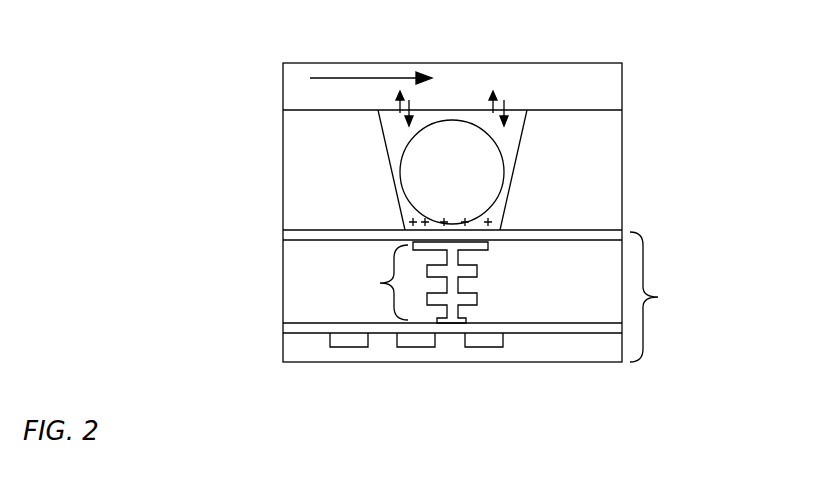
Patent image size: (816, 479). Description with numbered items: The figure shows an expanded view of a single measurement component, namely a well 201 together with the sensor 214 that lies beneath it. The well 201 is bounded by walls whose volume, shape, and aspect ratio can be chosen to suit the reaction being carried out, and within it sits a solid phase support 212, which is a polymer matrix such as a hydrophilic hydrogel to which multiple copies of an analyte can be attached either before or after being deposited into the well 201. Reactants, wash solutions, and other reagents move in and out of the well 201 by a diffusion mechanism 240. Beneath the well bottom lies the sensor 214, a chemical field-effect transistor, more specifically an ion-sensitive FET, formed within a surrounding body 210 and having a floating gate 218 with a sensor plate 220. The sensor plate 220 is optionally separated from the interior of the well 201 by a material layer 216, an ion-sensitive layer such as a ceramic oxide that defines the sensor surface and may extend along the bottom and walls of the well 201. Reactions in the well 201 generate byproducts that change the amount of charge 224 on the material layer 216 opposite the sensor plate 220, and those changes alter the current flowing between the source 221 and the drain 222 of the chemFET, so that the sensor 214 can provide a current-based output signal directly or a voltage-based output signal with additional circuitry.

The well 201 is at (395, 141).
The substrate 210 is at (602, 192).
The solid phase support 212 is at (413, 172).
The sensor 214 is at (512, 297).
The material layer 216 is at (283, 234).
The floating gate 218 is at (353, 282).
The sensor plate 220 is at (486, 246).
The source 221 is at (490, 345).
The drain 222 is at (414, 345).
The charge 224 is at (412, 209).
The diffusion mechanism 240 is at (503, 103).